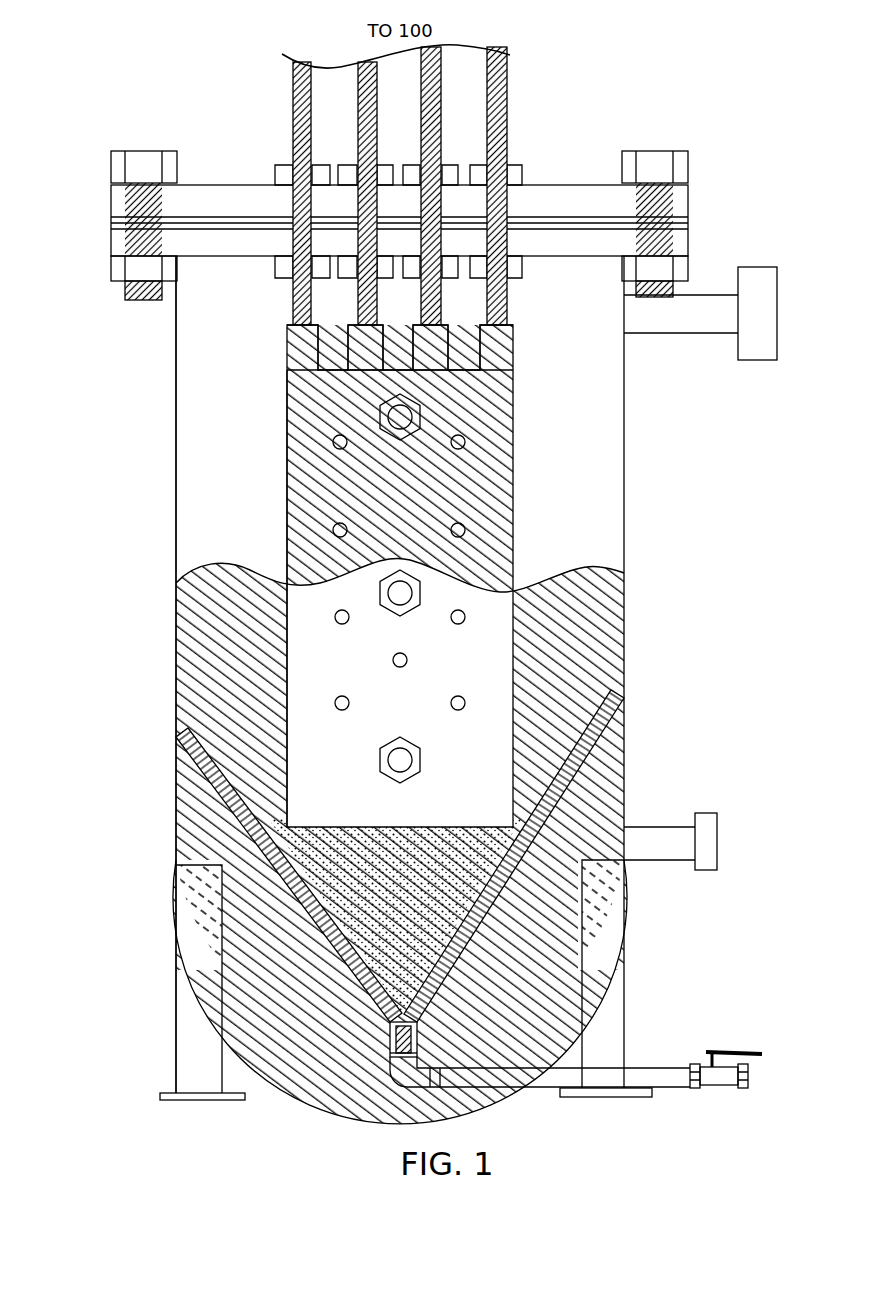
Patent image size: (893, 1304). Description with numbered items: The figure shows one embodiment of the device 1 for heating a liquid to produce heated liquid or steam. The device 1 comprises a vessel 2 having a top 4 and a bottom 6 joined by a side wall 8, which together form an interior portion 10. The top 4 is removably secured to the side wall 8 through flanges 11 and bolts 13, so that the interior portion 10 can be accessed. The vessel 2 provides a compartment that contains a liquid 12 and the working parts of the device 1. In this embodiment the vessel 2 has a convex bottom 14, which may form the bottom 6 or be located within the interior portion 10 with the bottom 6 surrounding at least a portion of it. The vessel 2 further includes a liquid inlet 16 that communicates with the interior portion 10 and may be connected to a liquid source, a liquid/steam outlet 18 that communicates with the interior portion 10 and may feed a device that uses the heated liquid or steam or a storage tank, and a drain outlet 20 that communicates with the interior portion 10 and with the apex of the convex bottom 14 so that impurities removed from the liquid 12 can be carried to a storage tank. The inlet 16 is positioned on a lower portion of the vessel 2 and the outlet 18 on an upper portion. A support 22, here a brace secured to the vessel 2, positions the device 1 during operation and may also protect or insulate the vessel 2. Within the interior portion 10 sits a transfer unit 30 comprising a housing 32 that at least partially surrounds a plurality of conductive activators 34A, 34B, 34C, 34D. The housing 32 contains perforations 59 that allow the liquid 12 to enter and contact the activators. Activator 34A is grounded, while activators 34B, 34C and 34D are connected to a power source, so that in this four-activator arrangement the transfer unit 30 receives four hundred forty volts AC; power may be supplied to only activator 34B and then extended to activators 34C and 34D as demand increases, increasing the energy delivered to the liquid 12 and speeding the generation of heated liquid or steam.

The device 1 is at (125, 449).
The vessel 2 is at (174, 376).
The top 4 is at (365, 213).
The bottom 6 is at (340, 1052).
The side wall 8 is at (174, 706).
The interior portion 10 is at (197, 489).
The flange 11 is at (106, 241).
The liquid 12 is at (200, 640).
The bolt 13 is at (115, 293).
The convex bottom 14 is at (480, 955).
The liquid inlet 16 is at (729, 843).
The liquid/steam outlet 18 is at (653, 340).
The drain outlet 20 is at (672, 1098).
The support 22 is at (174, 1001).
The transfer unit 30 is at (360, 556).
The housing 32 is at (305, 694).
The activator 34A is at (284, 343).
The activator 34B is at (350, 335).
The activator 34C is at (509, 300).
The activator 34D is at (516, 357).
The perforations 59 is at (372, 763).